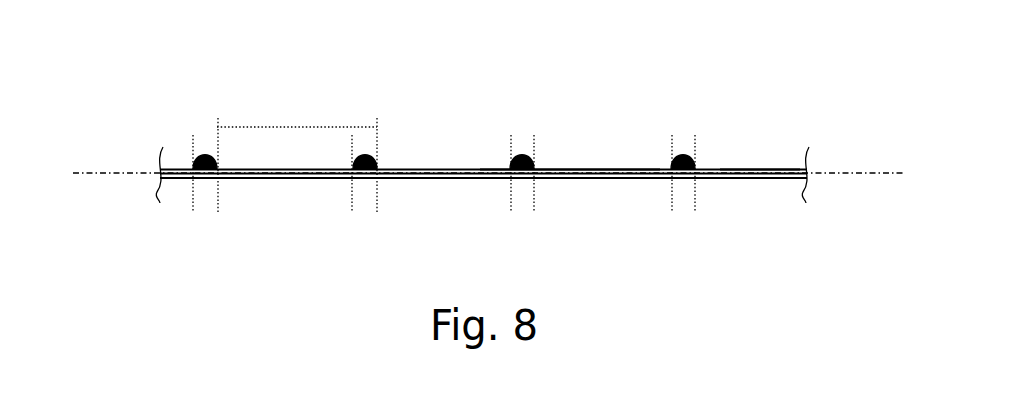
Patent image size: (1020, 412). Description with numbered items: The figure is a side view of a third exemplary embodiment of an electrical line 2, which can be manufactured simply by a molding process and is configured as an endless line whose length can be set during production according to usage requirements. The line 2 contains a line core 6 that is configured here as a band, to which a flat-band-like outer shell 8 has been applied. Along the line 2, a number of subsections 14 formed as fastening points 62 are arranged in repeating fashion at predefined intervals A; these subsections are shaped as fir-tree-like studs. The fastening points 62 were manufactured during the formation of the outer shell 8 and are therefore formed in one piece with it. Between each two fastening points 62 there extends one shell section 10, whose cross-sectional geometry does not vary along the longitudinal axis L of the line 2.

The line 2 is at (755, 128).
The line core 6 is at (578, 170).
The outer shell 8 is at (623, 170).
The shell section 10 is at (210, 181).
The subsection 14 is at (293, 203).
The fastening point 62 is at (520, 150).
The interval A is at (296, 127).
The longitudinal axis L is at (841, 172).